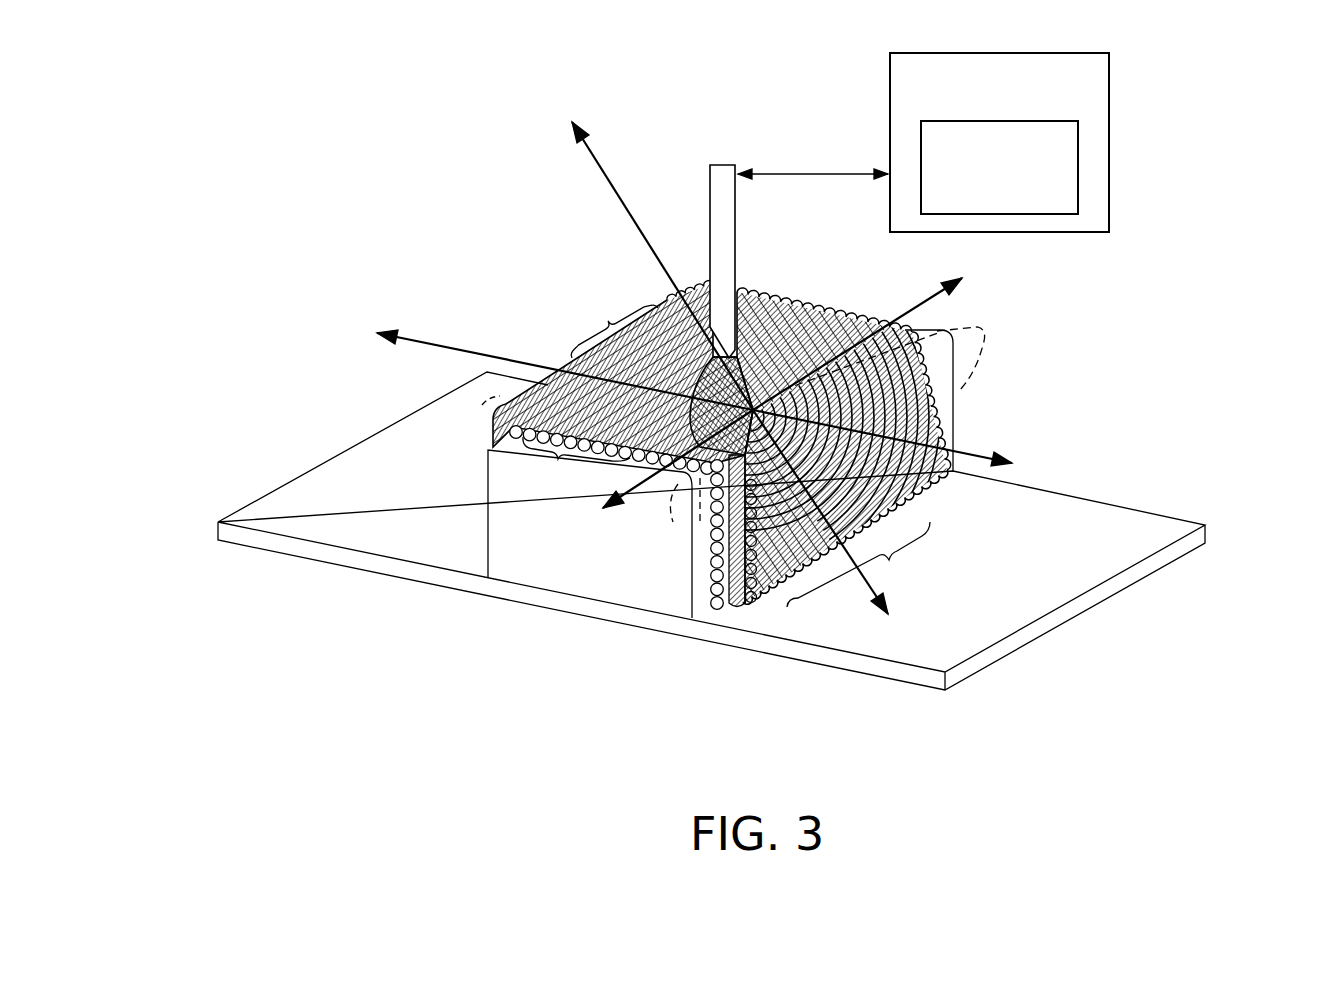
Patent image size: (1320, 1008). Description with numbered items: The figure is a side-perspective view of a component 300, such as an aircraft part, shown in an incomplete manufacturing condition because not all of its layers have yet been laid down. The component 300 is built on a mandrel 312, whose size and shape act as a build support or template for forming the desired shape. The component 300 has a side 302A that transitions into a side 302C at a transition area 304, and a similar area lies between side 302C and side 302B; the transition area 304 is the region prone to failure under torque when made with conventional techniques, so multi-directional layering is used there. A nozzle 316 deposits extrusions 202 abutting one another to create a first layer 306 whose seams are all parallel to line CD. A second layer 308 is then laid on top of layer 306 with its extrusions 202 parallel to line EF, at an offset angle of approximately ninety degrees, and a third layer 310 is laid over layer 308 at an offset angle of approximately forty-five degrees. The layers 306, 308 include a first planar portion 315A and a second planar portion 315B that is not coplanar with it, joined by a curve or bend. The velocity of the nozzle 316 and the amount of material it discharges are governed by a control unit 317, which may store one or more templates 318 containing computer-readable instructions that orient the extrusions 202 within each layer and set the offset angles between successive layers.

The component 300 is at (435, 135).
The extrusions 202 is at (726, 449).
The side 302A is at (893, 492).
The side 302B is at (482, 420).
The side 302C is at (838, 326).
The transition area 304 is at (978, 325).
The layer 306 is at (716, 606).
The layer 308 is at (735, 604).
The layer 310 is at (752, 602).
The mandrel 312 is at (1140, 510).
The first planar portion 315A is at (506, 432).
The second planar portion 315B is at (703, 522).
The nozzle 316 is at (725, 212).
The control unit 317 is at (999, 142).
The templates 318 is at (999, 167).